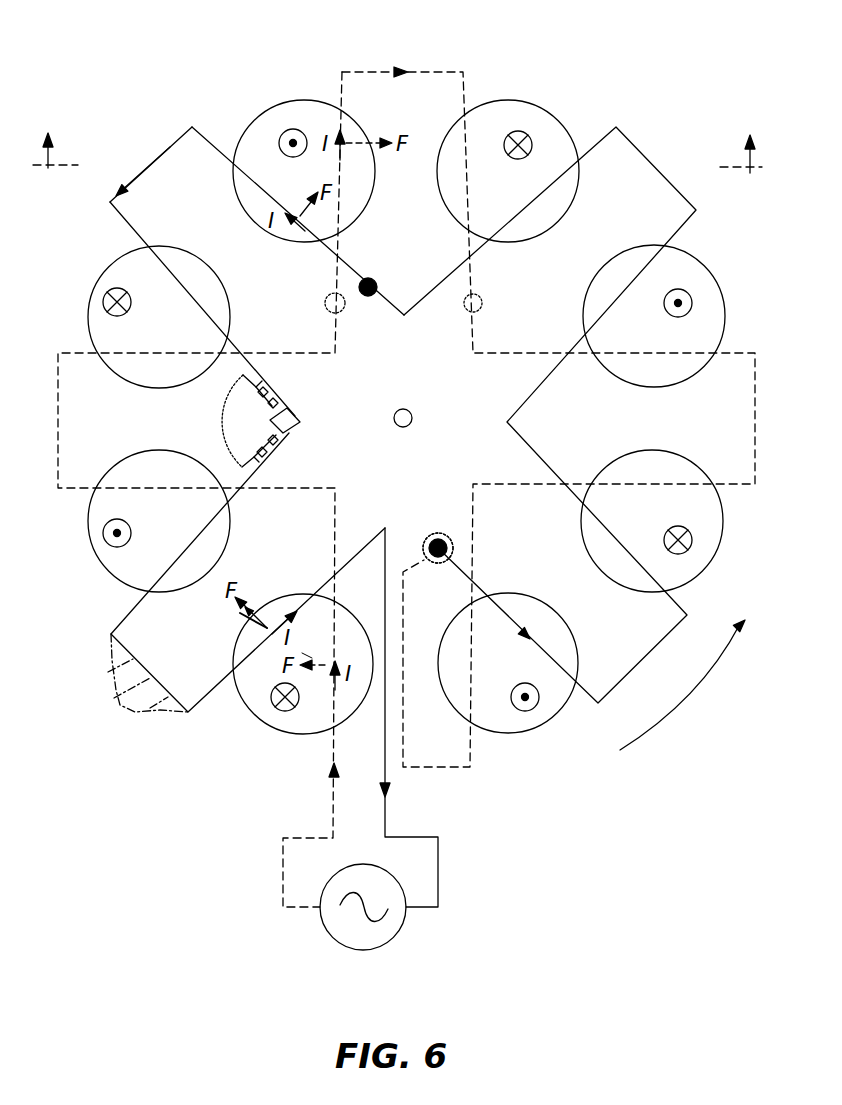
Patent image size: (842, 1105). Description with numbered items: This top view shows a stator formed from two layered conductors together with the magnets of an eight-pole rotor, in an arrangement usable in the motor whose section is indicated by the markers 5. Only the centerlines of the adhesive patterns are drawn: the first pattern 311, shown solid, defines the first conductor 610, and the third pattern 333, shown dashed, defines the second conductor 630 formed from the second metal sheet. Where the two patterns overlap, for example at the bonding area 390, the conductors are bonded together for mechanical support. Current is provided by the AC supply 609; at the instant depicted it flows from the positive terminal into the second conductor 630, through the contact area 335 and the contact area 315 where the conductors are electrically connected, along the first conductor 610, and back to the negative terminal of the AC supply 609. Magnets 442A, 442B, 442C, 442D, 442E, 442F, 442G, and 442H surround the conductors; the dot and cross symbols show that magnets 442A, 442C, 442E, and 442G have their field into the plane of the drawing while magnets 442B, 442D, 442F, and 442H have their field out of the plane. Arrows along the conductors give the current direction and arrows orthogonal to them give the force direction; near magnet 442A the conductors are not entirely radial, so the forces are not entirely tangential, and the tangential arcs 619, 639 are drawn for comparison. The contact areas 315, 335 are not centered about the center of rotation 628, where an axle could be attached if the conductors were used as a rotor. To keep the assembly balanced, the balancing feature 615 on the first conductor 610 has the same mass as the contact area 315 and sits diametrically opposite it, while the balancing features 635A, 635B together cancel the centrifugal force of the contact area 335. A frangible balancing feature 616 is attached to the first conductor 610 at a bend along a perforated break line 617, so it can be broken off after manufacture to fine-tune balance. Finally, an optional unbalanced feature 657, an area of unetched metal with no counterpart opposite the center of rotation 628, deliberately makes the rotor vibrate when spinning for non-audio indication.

The section indicator for FIG. 5 is at (397, 138).
The first pattern 311 is at (160, 152).
The contact area 315 is at (455, 548).
The third pattern 333 is at (422, 72).
The contact area 335 is at (428, 540).
The bonding area 390 is at (573, 365).
The magnet 442A is at (248, 708).
The magnet 442B is at (110, 570).
The magnet 442C is at (97, 293).
The magnet 442D is at (267, 105).
The magnet 442E is at (538, 101).
The magnet 442F is at (717, 290).
The magnet 442G is at (713, 553).
The magnet 442H is at (530, 733).
The AC supply 609 is at (392, 942).
The first conductor 610 is at (188, 127).
The balancing feature 615 is at (368, 297).
The frangible balancing feature 616 is at (230, 423).
The break line 617 is at (290, 417).
The tangential arc 619 is at (248, 634).
The center of rotation 628 is at (403, 427).
The second conductor 630 is at (352, 72).
The balancing feature 635A is at (325, 306).
The balancing feature 635B is at (482, 300).
The tangential arc 639 is at (303, 656).
The unbalanced feature 657 is at (110, 690).